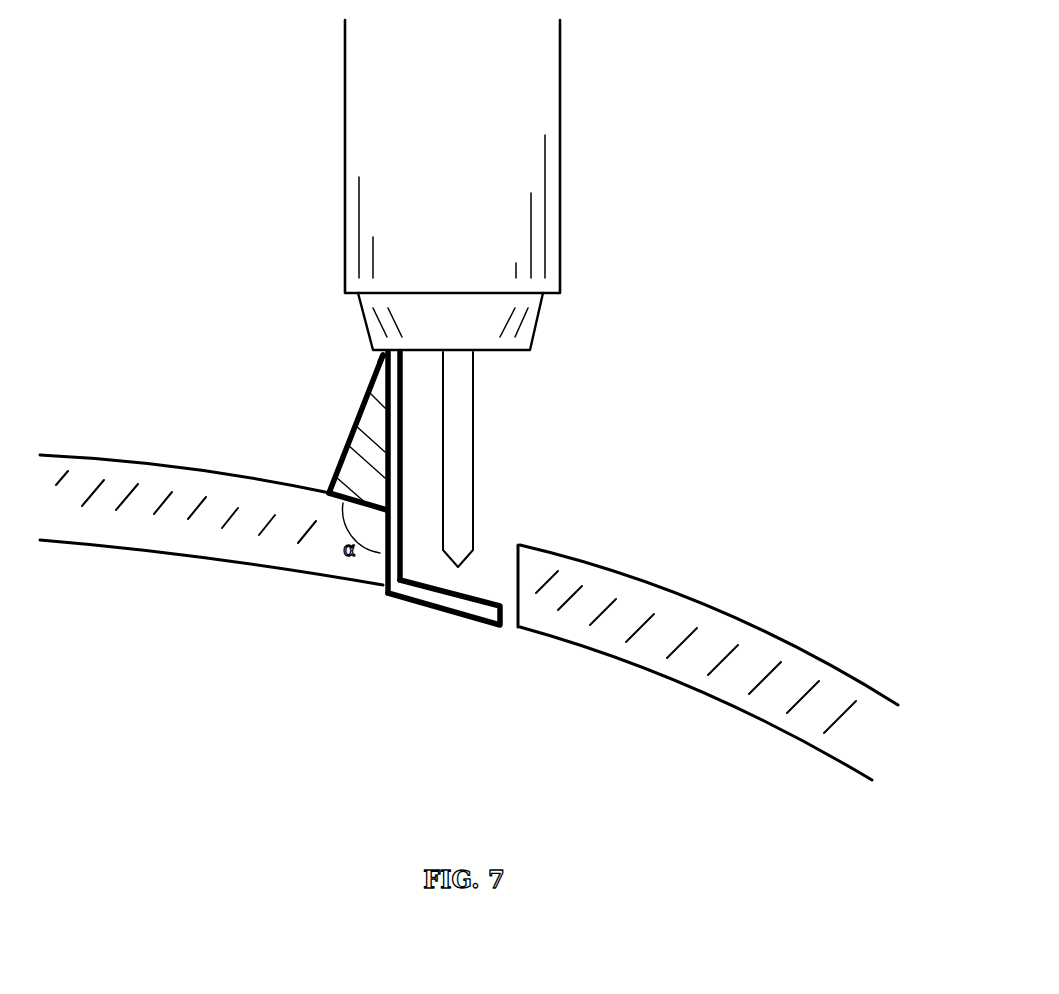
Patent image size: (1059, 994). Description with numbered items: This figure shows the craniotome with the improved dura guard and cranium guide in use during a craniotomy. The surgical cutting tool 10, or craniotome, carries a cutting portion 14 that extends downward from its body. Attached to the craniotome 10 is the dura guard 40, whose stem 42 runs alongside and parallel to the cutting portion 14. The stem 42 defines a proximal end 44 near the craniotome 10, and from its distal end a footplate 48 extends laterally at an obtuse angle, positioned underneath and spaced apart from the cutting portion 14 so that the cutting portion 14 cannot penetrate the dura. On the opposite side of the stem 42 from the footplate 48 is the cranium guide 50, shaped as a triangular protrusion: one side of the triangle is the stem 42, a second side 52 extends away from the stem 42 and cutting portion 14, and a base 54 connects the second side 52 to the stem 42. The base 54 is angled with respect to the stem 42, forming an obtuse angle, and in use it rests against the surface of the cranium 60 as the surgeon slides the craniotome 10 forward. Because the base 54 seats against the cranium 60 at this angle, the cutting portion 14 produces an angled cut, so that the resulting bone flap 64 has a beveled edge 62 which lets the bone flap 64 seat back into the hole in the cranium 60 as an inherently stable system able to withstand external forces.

The surgical cutting tool 10 is at (574, 162).
The cutting portion 14 is at (485, 482).
The dura guard 40 is at (211, 412).
The stem 42 is at (439, 527).
The proximal end 44 is at (382, 355).
The footplate 48 is at (392, 600).
The cranium guide 50 is at (328, 462).
The second side 52 is at (372, 397).
The base 54 is at (358, 513).
The cranium 60 is at (70, 455).
The beveled edge 62 is at (517, 570).
The bone flap 64 is at (667, 659).